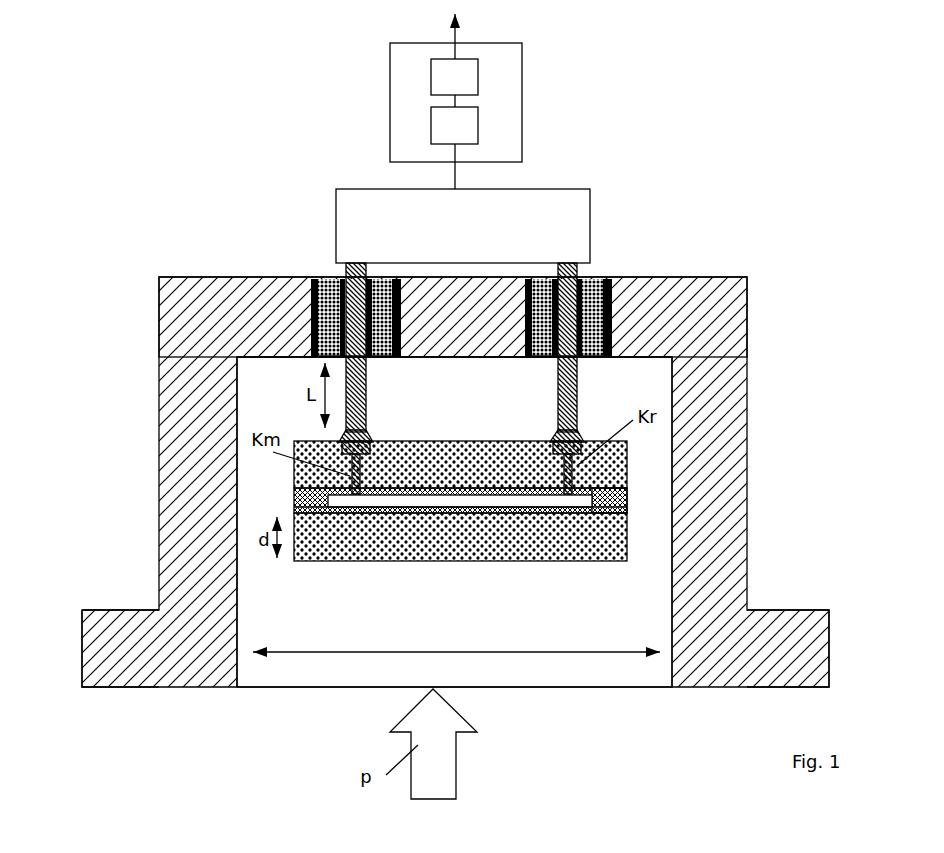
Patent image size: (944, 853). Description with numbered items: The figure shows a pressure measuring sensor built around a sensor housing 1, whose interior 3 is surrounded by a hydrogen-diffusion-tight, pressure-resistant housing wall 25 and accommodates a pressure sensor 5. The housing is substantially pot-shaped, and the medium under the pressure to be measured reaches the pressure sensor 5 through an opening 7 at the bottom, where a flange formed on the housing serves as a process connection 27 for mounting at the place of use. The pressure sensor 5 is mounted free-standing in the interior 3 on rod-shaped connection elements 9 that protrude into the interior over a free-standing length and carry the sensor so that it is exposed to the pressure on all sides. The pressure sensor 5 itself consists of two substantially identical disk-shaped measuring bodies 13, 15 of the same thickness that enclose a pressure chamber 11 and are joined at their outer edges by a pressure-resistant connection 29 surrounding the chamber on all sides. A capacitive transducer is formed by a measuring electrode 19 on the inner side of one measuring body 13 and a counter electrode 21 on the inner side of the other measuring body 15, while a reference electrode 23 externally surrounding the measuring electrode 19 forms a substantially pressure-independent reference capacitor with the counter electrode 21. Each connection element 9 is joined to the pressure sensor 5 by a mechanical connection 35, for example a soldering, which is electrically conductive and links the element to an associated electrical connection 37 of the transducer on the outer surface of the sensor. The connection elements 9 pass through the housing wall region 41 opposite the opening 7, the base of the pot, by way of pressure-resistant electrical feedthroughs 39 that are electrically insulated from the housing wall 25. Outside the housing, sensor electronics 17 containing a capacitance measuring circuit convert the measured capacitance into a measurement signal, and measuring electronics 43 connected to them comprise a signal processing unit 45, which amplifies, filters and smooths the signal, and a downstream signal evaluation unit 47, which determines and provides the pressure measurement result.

The sensor housing 1 is at (434, 507).
The interior 3 is at (453, 414).
The pressure sensor 5 is at (544, 508).
The opening 7 is at (402, 653).
The connection elements 9 is at (367, 397).
The pressure chamber 11 is at (457, 502).
The measuring body 13 is at (451, 477).
The measuring body 15 is at (451, 545).
The sensor electronics 17 is at (444, 235).
The measuring electrode 19 is at (387, 493).
The counter electrode 21 is at (413, 512).
The reference electrode 23 is at (567, 494).
The housing wall 25 is at (170, 410).
The process connection 27 is at (105, 687).
The pressure-resistant connection 29 is at (627, 495).
The mechanical connection 35 is at (362, 440).
The electrical connection 37 is at (380, 442).
The electrical feedthrough 39 is at (327, 277).
The housing wall region 41 is at (449, 327).
The measuring electronics 43 is at (456, 97).
The signal processing unit 45 is at (444, 134).
The signal evaluation unit 47 is at (444, 85).